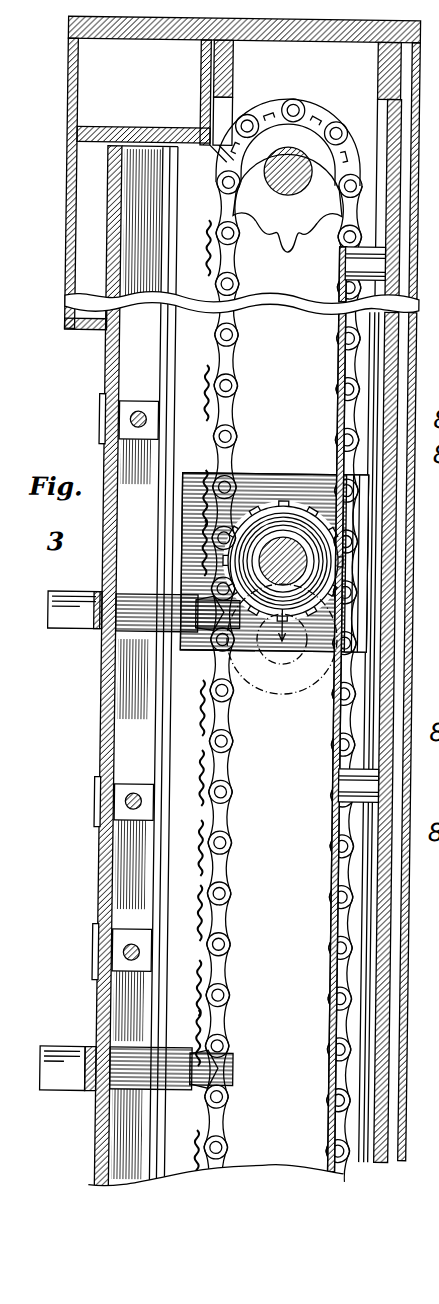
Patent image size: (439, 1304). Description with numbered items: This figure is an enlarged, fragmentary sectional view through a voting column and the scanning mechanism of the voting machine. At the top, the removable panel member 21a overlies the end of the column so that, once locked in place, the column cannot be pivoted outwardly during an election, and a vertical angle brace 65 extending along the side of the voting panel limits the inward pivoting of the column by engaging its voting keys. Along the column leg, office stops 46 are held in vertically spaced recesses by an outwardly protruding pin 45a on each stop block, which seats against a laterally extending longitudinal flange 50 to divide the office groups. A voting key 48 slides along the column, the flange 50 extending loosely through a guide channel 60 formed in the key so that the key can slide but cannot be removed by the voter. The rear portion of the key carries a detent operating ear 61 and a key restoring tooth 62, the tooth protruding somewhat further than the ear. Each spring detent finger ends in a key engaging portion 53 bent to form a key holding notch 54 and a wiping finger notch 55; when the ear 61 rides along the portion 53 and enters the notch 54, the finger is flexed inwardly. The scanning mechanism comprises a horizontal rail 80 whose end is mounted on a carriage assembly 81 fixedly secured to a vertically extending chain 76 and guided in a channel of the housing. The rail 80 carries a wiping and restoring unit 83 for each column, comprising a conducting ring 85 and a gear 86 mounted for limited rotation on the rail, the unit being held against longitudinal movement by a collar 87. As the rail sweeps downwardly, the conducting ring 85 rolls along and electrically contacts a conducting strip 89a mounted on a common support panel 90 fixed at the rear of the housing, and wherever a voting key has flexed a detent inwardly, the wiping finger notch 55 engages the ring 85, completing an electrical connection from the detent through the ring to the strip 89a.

The panel member 21a is at (62, 171).
The vertical angle brace 65 is at (150, 244).
The chain 76 is at (240, 372).
The office stop 46 is at (142, 401).
The outwardly protruding pin 45a is at (128, 420).
The key engaging portion 53 is at (210, 454).
The key holding notch 54 is at (205, 463).
The wiping finger notch 55 is at (211, 493).
The gear 86 is at (250, 536).
The carriage assembly 81 is at (294, 477).
The conducting ring 85 is at (262, 498).
The horizontal rail 80 is at (283, 555).
The collar 87 is at (255, 536).
The guide channel 60 is at (102, 590).
The detent operating ear 61 is at (215, 604).
The voting key 48 is at (79, 640).
The longitudinal flange 50 is at (104, 680).
The key restoring tooth 62 is at (232, 642).
The conducting strip 89a is at (334, 718).
The wiping and restoring unit 83 is at (388, 516).
The support panel 90 is at (387, 997).